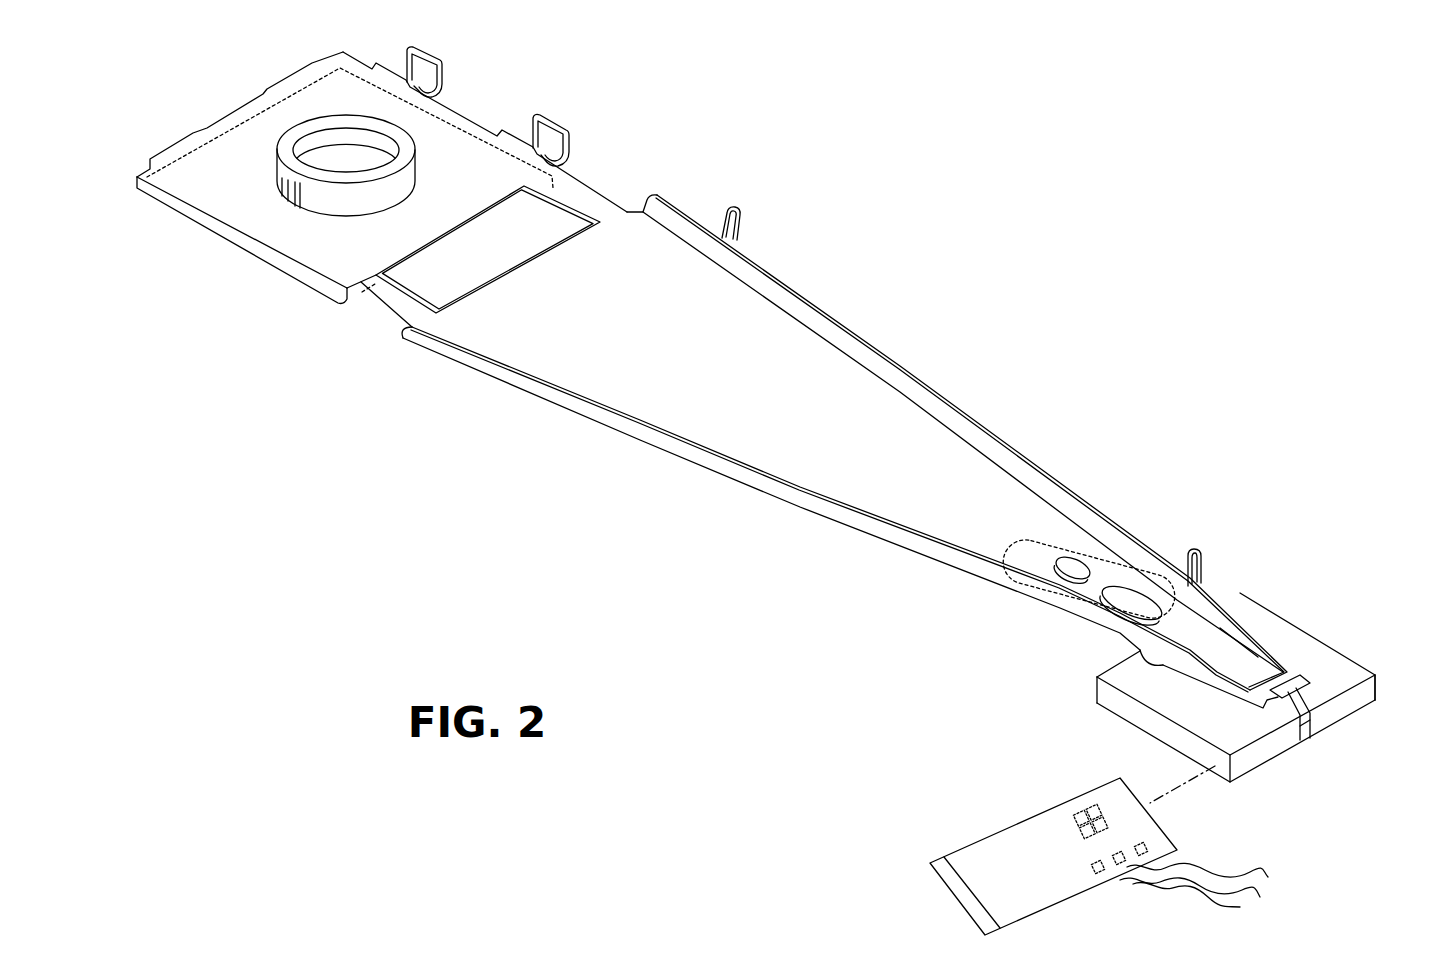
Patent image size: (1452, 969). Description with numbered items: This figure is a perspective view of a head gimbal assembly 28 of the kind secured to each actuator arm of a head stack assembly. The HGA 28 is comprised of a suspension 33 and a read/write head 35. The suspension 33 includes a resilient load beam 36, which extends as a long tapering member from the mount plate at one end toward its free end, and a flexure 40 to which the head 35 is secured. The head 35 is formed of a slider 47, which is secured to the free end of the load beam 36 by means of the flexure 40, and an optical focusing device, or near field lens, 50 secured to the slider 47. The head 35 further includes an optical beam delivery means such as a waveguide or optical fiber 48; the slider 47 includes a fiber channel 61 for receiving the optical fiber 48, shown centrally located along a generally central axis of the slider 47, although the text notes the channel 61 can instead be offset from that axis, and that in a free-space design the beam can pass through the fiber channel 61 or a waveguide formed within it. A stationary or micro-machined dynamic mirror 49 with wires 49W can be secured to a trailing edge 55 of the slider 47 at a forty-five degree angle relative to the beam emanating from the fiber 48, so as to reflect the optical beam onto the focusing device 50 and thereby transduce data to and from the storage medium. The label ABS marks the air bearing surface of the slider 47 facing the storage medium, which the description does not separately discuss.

The head gimbal assembly 28 is at (895, 175).
The suspension 33 is at (1077, 470).
The load beam 36 is at (861, 410).
The read/write head 35 is at (1268, 586).
The flexure 40 is at (1130, 652).
The slider 47 is at (1299, 622).
The optical fiber 48 is at (1306, 698).
The trailing edge 55 is at (1378, 692).
The fiber channel 61 is at (1318, 716).
The optical focusing device 50 is at (1308, 735).
The air bearing surface ABS is at (1260, 771).
The mirror 49 is at (1037, 815).
The wires 49W is at (1297, 899).